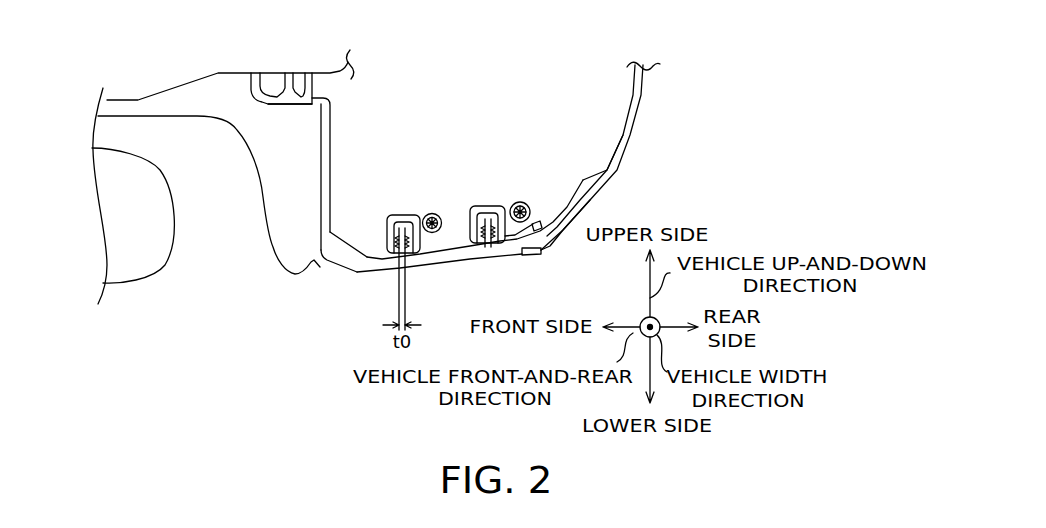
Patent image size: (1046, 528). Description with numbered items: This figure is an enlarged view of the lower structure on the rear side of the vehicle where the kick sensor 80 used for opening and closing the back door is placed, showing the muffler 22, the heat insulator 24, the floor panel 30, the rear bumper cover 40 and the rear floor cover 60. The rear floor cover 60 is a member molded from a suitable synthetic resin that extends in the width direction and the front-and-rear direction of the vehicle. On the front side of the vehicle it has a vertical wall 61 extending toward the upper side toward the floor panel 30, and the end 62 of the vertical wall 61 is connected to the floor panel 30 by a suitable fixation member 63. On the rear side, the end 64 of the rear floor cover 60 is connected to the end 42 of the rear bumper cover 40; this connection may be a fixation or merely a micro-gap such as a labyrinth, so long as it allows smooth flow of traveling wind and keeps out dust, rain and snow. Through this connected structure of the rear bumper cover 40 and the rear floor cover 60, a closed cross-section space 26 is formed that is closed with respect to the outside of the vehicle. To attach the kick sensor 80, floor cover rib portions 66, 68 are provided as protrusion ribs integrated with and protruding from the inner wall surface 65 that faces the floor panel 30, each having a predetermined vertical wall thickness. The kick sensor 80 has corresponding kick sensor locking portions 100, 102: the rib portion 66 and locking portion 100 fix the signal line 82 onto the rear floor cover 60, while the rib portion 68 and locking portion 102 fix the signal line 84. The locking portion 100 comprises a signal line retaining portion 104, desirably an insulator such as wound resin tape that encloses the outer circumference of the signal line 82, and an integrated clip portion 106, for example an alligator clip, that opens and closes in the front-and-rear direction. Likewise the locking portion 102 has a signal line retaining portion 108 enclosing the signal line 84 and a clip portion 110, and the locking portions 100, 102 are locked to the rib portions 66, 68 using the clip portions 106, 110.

The muffler 22 is at (135, 253).
The heat insulator 24 is at (277, 249).
The closed cross-section space 26 is at (560, 83).
The floor panel 30 is at (192, 80).
The rear bumper cover 40 is at (603, 170).
The end of the rear bumper cover 42 is at (529, 256).
The rear floor cover 60 is at (341, 256).
The vertical wall 61 is at (325, 190).
The end of the vertical wall 62 is at (253, 89).
The fixation member 63 is at (290, 104).
The end of the rear floor cover 64 is at (562, 223).
The inner wall surface 65 is at (453, 242).
The floor cover rib portion 66 is at (386, 258).
The floor cover rib portion 68 is at (481, 256).
The kick sensor 80 is at (441, 111).
The signal line 82 is at (432, 212).
The signal line 84 is at (530, 203).
The kick sensor locking portion 100 is at (382, 220).
The kick sensor locking portion 102 is at (489, 175).
The signal line retaining portion 104 is at (408, 238).
The clip portion 106 is at (388, 214).
The signal line retaining portion 108 is at (504, 194).
The clip portion 110 is at (474, 206).